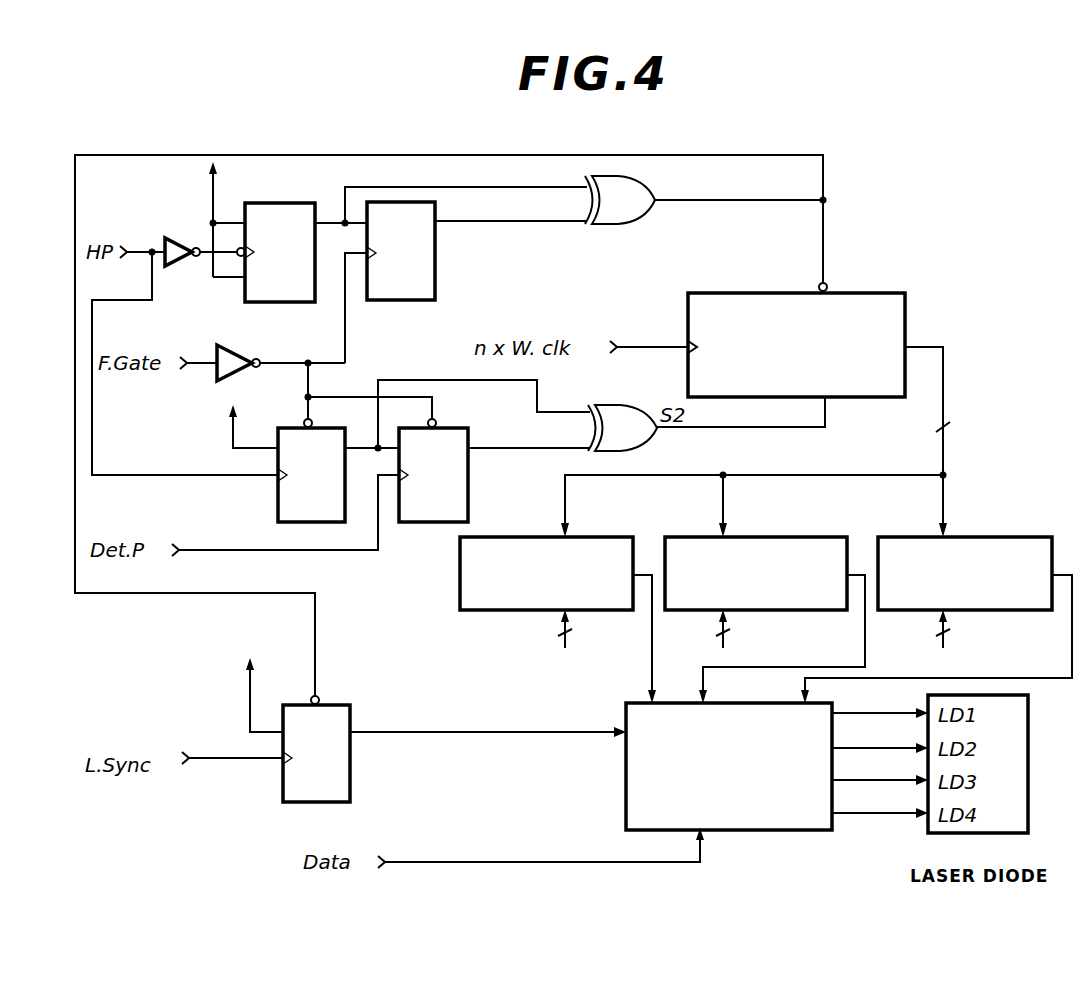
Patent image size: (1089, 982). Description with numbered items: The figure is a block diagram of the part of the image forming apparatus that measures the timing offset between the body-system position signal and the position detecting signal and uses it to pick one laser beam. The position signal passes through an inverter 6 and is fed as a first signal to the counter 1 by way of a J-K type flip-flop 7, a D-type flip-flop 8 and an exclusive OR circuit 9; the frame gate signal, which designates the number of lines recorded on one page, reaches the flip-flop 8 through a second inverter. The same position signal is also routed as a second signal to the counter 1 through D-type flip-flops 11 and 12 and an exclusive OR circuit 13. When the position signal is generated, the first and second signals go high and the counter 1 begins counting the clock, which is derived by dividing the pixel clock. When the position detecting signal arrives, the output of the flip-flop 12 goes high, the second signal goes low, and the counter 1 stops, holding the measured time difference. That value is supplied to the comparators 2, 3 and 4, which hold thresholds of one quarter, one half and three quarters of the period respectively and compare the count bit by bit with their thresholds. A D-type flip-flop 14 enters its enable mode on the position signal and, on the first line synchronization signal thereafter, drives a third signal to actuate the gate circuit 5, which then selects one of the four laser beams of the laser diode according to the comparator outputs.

The counter 1 is at (905, 308).
The comparator 2 is at (578, 537).
The comparator 3 is at (793, 537).
The comparator 4 is at (981, 537).
The gate circuit 5 is at (626, 788).
The inverter 6 is at (177, 238).
The J-K type flip-flop 7 is at (268, 203).
The D-type flip-flop 8 is at (435, 284).
The exclusive OR circuit 9 is at (605, 226).
The D-type flip-flop 11 is at (278, 505).
The D-type flip-flop 12 is at (425, 523).
The exclusive OR circuit 13 is at (754, 491).
The D-type flip-flop 14 is at (350, 784).